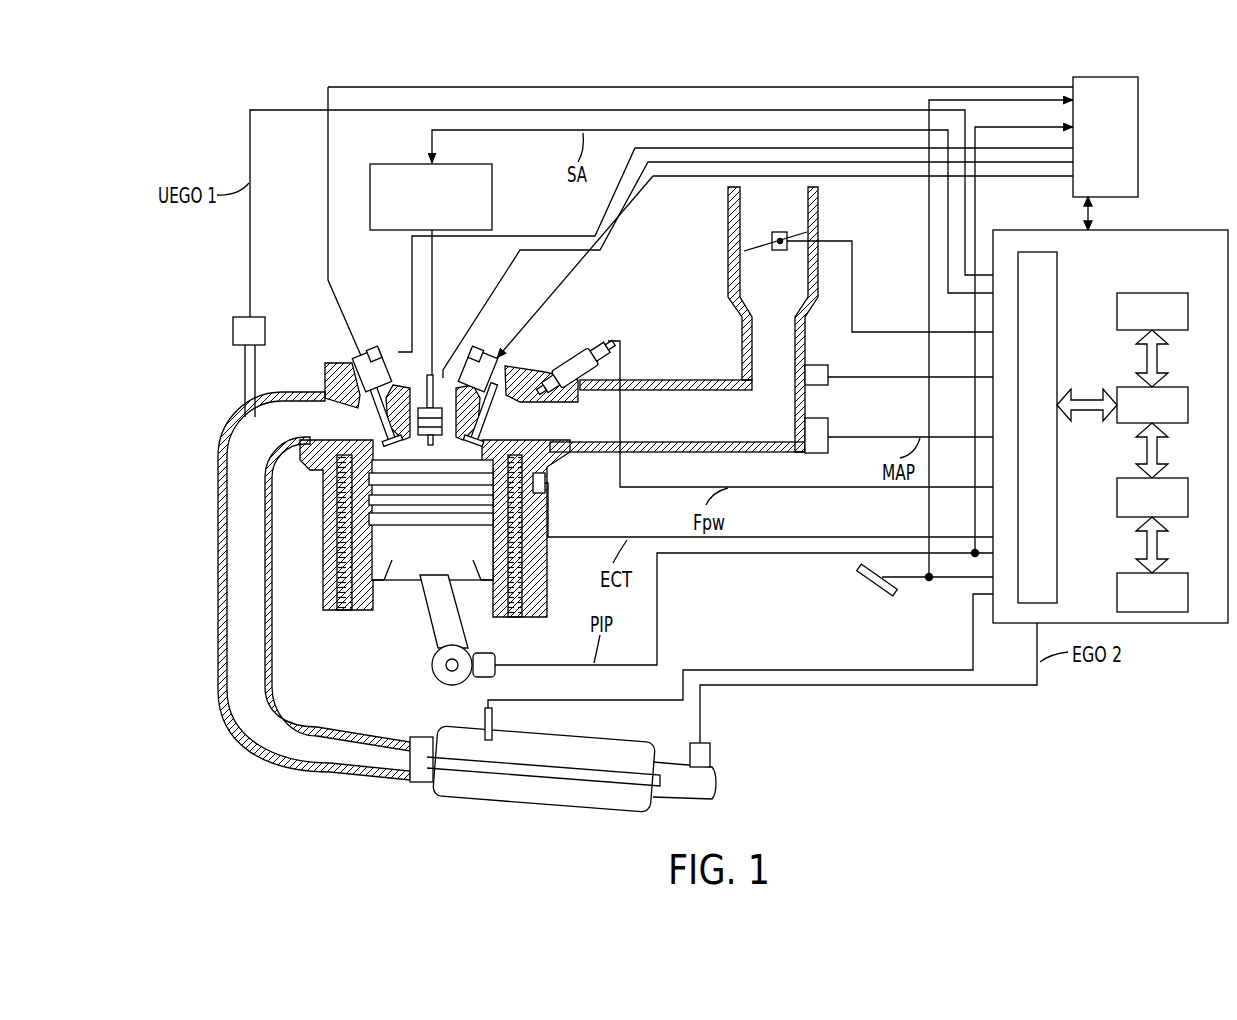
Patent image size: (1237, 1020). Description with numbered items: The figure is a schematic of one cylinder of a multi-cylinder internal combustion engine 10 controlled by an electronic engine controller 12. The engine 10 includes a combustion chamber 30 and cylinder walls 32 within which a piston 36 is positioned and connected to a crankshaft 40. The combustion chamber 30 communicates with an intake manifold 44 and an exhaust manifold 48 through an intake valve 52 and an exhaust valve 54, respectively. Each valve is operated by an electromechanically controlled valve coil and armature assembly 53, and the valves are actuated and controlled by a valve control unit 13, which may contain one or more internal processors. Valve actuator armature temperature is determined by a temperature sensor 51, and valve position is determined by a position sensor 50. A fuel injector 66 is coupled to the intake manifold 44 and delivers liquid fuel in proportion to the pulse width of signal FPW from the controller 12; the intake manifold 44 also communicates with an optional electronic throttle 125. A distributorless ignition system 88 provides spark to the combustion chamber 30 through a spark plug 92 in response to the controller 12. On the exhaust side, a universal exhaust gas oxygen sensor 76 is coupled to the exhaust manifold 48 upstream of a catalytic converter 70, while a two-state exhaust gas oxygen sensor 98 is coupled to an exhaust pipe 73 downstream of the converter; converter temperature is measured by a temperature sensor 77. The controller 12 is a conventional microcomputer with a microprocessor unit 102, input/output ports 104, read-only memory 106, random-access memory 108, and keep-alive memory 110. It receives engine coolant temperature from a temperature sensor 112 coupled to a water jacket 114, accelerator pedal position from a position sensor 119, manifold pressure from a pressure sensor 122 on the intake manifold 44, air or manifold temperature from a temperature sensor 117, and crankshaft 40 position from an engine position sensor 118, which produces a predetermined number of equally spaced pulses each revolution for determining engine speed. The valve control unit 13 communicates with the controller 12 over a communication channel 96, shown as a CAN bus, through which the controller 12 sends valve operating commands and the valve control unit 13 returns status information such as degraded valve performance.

The internal combustion engine 10 is at (322, 360).
The electronic engine controller 12 is at (1110, 456).
The valve control unit (VCU) 13 is at (1122, 77).
The combustion chamber 30 is at (415, 457).
The cylinder walls 32 is at (358, 612).
The piston 36 is at (412, 572).
The crankshaft 40 is at (432, 665).
The intake manifold 44 is at (712, 428).
The exhaust manifold 48 is at (235, 490).
The position sensor 50 is at (394, 347).
The temperature sensor 51 is at (452, 347).
The intake valve 52 is at (478, 437).
The valve coil and armature assembly 53 is at (366, 353).
The exhaust valve 54 is at (387, 437).
The fuel injector 66 is at (565, 350).
The catalytic converter 70 is at (530, 800).
The exhaust pipe 73 is at (678, 798).
The Universal Exhaust Gas Oxygen (UEGO) sensor 76 is at (247, 317).
The temperature sensor 77 is at (485, 718).
The distributorless ignition system 88 is at (493, 212).
The spark plug 92 is at (434, 362).
The communication channel 96 is at (1084, 212).
The two-state exhaust gas oxygen sensor 98 is at (712, 746).
The microprocessor unit 102 is at (1182, 382).
The input/output ports 104 is at (1060, 272).
The read-only-memory 106 is at (1166, 292).
The random-access-memory 108 is at (1182, 474).
The keep-alive-memory 110 is at (1182, 568).
The temperature sensor 112 is at (550, 478).
The water jacket 114 is at (337, 613).
The temperature sensor 117 is at (835, 364).
The engine position sensor 118 is at (497, 658).
The position sensor 119 is at (873, 592).
The pressure sensor 122 is at (835, 425).
The electronic throttle 125 is at (770, 222).